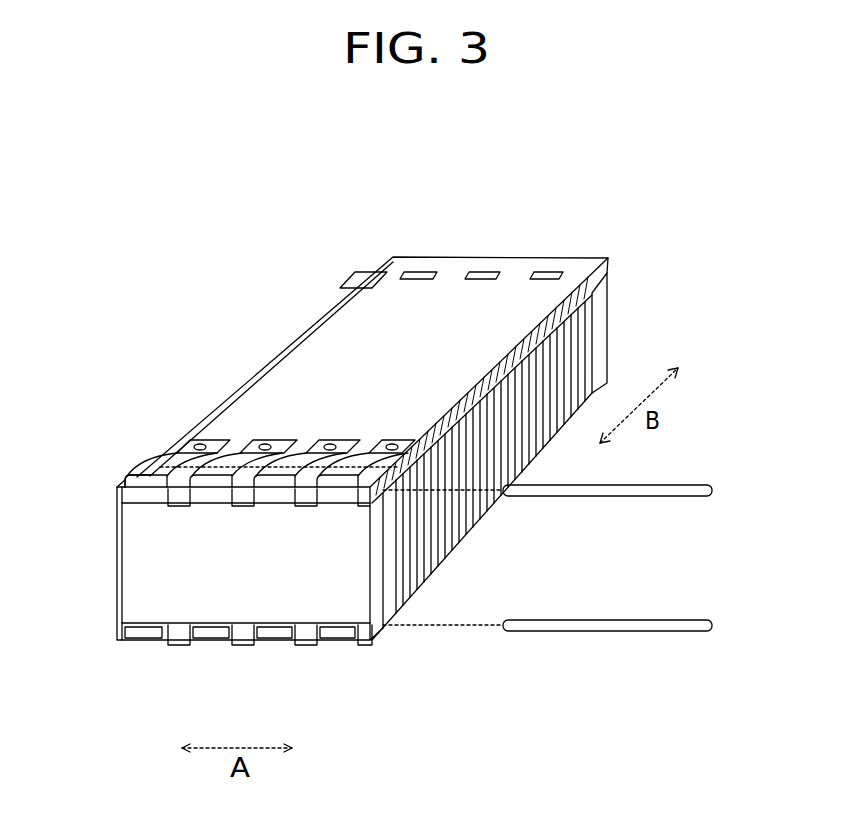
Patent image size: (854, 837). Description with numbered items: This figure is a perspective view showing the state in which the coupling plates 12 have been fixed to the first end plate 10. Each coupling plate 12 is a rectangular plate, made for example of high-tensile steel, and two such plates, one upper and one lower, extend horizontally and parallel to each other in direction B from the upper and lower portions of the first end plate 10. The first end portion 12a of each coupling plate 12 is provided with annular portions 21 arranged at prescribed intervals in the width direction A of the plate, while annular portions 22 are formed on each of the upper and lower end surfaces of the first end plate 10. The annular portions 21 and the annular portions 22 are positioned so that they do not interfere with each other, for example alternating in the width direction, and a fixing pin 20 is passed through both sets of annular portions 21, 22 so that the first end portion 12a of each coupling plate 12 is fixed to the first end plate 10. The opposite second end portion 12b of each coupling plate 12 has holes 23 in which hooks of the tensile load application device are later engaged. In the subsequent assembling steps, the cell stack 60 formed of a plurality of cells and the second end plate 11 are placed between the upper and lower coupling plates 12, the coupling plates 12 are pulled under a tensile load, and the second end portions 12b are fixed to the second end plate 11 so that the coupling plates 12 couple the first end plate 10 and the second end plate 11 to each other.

The first end plate 10 is at (143, 572).
The second end plate 11 is at (598, 340).
The coupling plate 12 is at (312, 352).
The first end portion 12a is at (140, 477).
The second end portion 12b is at (395, 257).
The fixing pin 20 is at (637, 497).
The annular portions 21 is at (300, 470).
The annular portions 22 is at (365, 505).
The holes 23 is at (547, 273).
The cell stack 60 is at (530, 447).